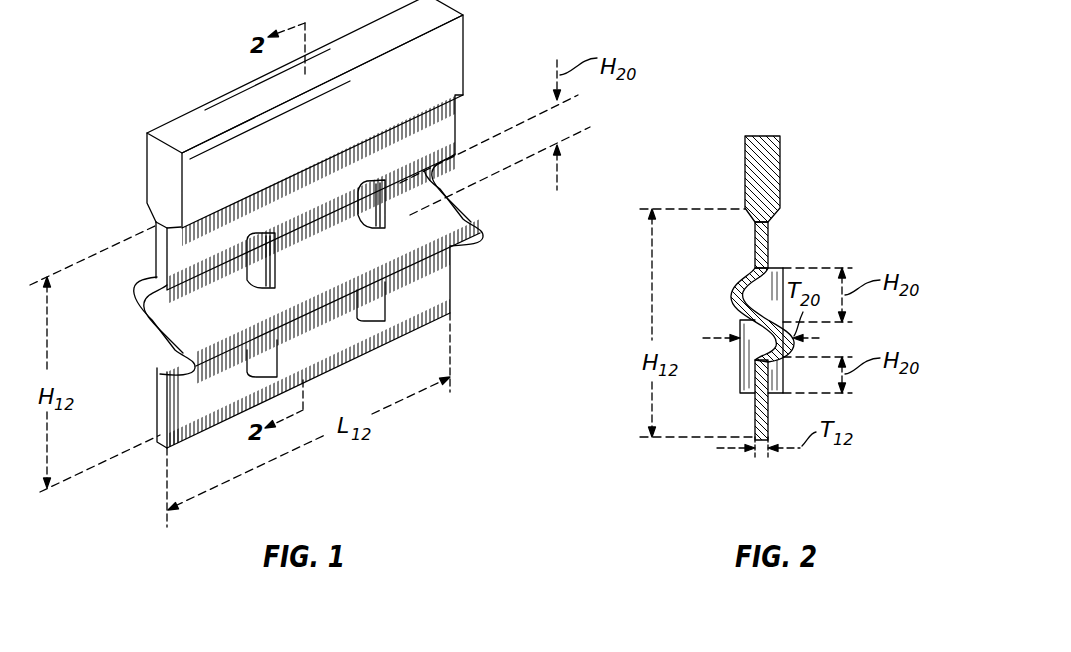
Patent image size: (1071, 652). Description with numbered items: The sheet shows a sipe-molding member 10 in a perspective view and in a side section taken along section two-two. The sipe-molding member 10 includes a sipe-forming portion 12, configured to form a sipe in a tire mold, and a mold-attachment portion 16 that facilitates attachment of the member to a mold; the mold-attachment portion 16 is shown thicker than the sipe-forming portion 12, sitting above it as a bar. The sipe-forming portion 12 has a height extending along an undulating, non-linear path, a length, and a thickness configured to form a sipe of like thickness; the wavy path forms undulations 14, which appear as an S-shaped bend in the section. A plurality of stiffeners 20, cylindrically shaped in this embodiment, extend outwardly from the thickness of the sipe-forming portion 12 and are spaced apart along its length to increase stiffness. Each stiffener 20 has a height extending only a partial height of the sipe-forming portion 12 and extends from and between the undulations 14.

In FIG. 1, the sipe-molding member 10 is at (126, 49).
In FIG. 2, the sipe-molding member 10 is at (836, 78).
In FIG. 1, the sipe-forming portion 12 is at (445, 133).
In FIG. 2, the sipe-forming portion 12 is at (761, 331).
In FIG. 1, the undulations 14 is at (131, 289).
In FIG. 2, the undulations 14 is at (730, 300).
In FIG. 1, the mold-attachment portion 16 is at (448, 63).
In FIG. 2, the mold-attachment portion 16 is at (783, 178).
In FIG. 1, the stiffeners 20 is at (375, 231).
In FIG. 2, the stiffeners 20 is at (761, 330).